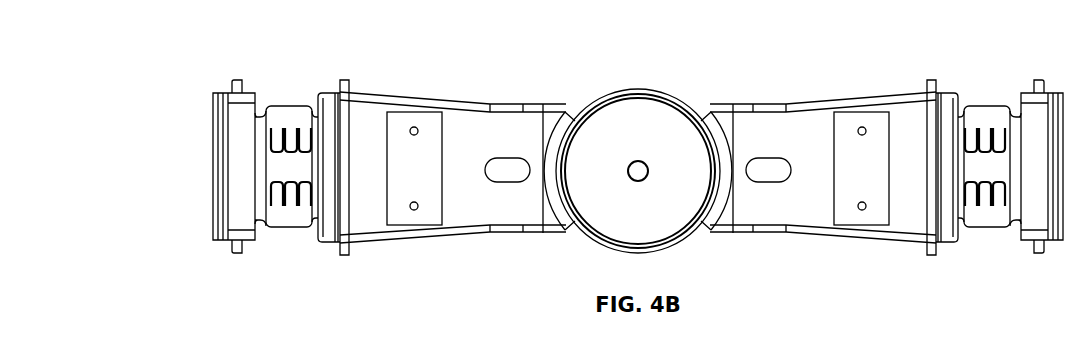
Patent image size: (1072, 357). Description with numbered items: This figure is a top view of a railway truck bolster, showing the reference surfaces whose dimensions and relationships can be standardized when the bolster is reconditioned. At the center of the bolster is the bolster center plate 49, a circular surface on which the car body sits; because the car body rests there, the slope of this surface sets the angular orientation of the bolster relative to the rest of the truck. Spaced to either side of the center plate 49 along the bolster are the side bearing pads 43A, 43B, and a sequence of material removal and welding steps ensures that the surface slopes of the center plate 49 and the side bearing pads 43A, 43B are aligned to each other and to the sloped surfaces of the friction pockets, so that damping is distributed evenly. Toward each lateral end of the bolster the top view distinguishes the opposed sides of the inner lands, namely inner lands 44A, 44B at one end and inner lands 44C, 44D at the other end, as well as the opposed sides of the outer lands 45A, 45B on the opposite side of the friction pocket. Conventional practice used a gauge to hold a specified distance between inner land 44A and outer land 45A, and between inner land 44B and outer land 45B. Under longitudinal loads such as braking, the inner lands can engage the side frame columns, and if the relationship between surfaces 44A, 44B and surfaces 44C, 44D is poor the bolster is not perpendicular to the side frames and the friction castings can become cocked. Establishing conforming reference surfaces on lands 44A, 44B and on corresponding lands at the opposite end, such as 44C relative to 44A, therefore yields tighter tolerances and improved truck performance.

The side bearing pad 43A is at (414, 168).
The side bearing pad 43B is at (861, 168).
The inner land 44A is at (948, 92).
The inner land 44B is at (946, 244).
The inner land 44C is at (328, 92).
The inner land 44D is at (327, 243).
The outer land 45A is at (1022, 92).
The outer land 45B is at (1024, 244).
The bolster center plate 49 is at (665, 98).